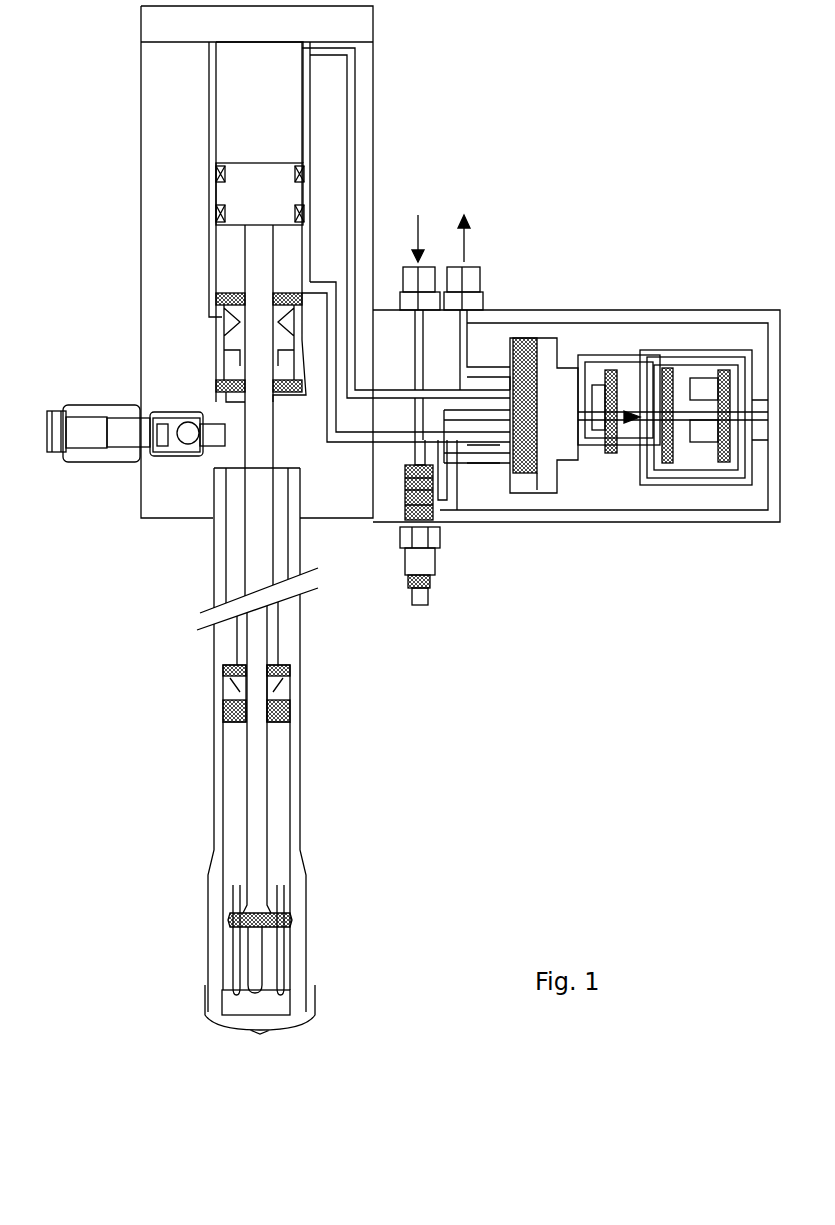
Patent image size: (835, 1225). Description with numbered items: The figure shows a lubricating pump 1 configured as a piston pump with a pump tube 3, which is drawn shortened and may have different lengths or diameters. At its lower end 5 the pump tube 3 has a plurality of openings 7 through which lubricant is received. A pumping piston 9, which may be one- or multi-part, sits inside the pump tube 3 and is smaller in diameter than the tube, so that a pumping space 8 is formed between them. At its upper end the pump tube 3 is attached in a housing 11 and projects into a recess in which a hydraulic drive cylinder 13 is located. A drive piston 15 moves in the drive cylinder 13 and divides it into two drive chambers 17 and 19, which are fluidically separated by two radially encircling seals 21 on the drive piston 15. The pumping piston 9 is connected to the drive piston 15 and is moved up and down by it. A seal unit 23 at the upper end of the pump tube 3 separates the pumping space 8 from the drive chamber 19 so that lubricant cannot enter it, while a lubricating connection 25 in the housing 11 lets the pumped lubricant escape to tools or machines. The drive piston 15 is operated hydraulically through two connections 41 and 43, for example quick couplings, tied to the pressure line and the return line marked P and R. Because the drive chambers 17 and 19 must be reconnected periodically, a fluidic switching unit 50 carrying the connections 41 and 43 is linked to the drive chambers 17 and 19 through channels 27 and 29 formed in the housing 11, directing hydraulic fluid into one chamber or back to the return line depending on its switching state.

The lubricating pump 1 is at (388, 64).
The pump tube 3 is at (300, 673).
The lower end 5 is at (176, 1018).
The openings 7 is at (300, 947).
The pumping space 8 is at (230, 798).
The pumping piston 9 is at (253, 815).
The housing 11 is at (148, 67).
The hydraulic drive cylinder 13 is at (210, 100).
The drive piston 15 is at (272, 208).
The drive chamber 17 is at (276, 116).
The drive chamber 19 is at (231, 263).
The seals 21 is at (214, 213).
The seal unit 23 is at (225, 338).
The lubricating connection 25 is at (88, 457).
The channel 27 is at (355, 103).
The channel 29 is at (358, 438).
The connection 41 is at (413, 282).
The connection 43 is at (478, 282).
The fluidic switching unit 50 is at (650, 306).